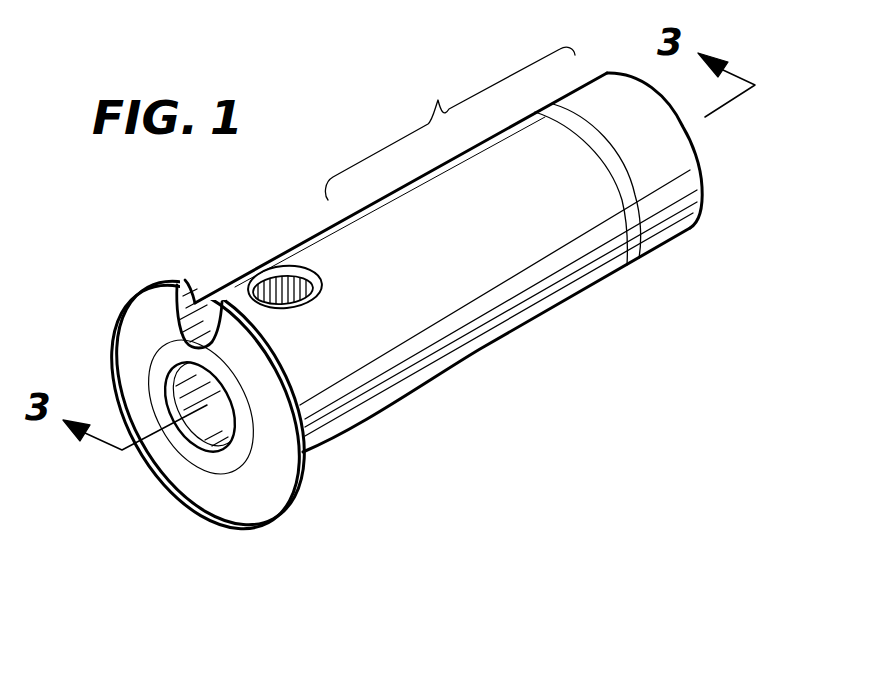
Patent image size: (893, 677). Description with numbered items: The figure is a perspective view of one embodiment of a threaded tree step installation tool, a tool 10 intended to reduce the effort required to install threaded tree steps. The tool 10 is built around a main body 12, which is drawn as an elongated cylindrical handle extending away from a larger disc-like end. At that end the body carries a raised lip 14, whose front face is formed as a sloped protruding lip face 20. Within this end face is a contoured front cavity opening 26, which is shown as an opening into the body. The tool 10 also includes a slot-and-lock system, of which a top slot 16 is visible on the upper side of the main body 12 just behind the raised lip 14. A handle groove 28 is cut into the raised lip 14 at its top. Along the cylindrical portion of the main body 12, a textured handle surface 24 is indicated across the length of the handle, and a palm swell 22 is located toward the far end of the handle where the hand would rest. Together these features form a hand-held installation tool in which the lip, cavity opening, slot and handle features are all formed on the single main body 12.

The tool 10 is at (387, 315).
The main body 12 is at (415, 320).
The raised lip 14 is at (297, 495).
The top slot 16 is at (288, 283).
The sloped protruding lip face 20 is at (217, 490).
The palm swell 22 is at (572, 258).
The textured handle surface 24 is at (450, 123).
The contoured front cavity opening 26 is at (202, 420).
The handle groove 28 is at (172, 284).